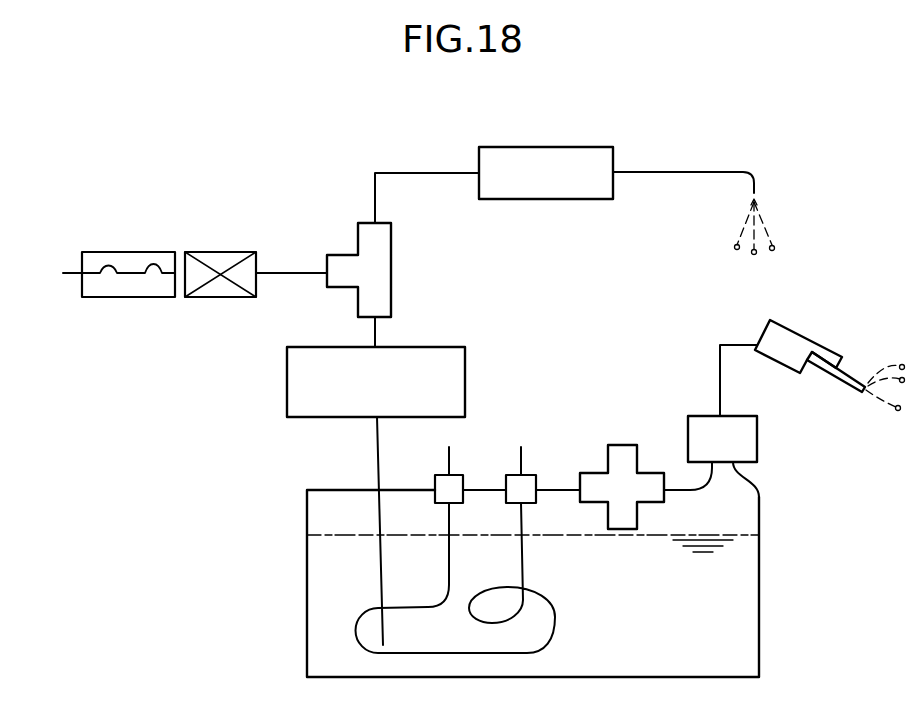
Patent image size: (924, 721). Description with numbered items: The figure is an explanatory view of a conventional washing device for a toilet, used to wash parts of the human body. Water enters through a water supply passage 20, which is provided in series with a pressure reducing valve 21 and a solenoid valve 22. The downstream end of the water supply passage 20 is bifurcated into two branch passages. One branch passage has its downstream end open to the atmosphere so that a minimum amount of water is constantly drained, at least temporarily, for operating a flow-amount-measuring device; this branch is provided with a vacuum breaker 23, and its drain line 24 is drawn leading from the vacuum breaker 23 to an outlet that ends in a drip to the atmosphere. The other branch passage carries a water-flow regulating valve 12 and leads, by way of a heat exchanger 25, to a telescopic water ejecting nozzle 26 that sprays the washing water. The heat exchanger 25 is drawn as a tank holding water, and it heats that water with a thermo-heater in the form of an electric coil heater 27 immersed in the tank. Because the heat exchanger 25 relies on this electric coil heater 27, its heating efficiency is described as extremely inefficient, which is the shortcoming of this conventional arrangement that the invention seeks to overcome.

The water-flow regulating valve 12 is at (442, 346).
The water supply passage 20 is at (63, 272).
The pressure reducing valve 21 is at (141, 251).
The solenoid valve 22 is at (237, 251).
The vacuum breaker 23 is at (563, 200).
The vent line / overflow spray 24 is at (680, 175).
The heat exchanger 25 is at (760, 573).
The telescopic water ejecting nozzle 26 is at (805, 337).
The electric coil heater 27 is at (532, 473).